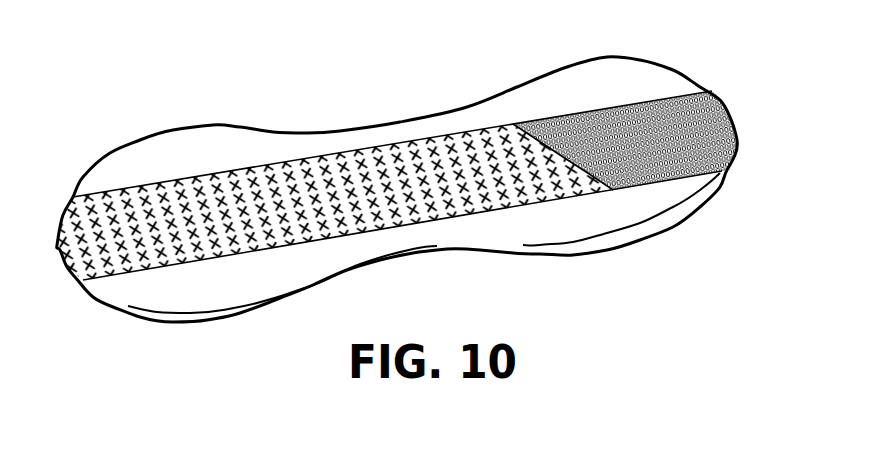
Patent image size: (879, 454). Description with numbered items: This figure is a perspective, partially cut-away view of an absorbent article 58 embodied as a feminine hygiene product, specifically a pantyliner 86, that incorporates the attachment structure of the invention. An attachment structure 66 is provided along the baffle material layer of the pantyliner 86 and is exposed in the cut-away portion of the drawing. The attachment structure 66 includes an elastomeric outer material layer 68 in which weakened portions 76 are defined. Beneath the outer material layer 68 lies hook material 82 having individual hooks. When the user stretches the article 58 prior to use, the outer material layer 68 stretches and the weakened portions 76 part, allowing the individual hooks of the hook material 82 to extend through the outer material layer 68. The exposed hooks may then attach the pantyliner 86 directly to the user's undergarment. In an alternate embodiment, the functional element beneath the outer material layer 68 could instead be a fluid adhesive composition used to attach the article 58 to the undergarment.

The absorbent article 58 is at (397, 185).
The attachment structure 66 is at (397, 174).
The outer material layer 68 is at (581, 178).
The weakened portions 76 is at (335, 215).
The hook material 82 is at (625, 101).
The pantyliner 86 is at (122, 313).